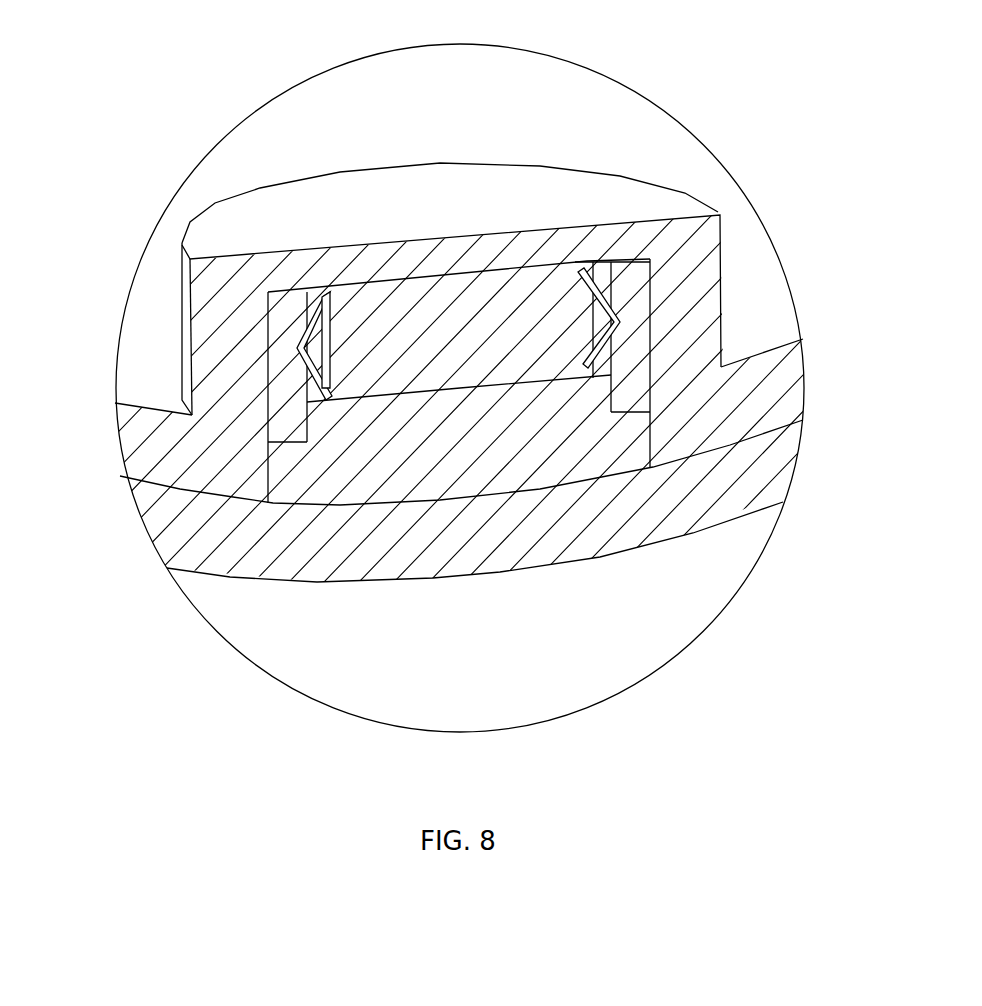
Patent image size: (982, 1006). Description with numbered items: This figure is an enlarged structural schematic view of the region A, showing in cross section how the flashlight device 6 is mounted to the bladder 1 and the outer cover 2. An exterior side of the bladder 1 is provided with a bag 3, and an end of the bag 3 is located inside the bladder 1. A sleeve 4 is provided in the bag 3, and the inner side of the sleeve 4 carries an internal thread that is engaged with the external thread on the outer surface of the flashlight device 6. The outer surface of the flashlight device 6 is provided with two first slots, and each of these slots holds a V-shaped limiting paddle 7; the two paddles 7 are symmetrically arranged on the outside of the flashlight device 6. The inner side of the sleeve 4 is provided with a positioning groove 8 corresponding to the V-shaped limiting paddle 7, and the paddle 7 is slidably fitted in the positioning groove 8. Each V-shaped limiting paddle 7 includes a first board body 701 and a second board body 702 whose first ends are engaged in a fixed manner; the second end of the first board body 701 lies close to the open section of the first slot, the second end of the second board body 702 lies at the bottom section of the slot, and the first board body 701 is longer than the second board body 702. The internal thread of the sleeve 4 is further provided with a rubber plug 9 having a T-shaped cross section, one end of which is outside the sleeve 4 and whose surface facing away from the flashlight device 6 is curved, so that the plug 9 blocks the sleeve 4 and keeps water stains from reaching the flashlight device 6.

The bladder 1 is at (769, 388).
The outer cover 2 is at (718, 493).
The bag 3 is at (482, 178).
The sleeve 4 is at (621, 283).
The flashlight device 6 is at (564, 279).
The V-shaped limiting paddle 7 is at (307, 326).
The positioning groove 8 is at (320, 347).
The rubber plug 9 is at (385, 470).
The first board body 701 is at (598, 353).
The second board body 702 is at (597, 283).
The region A is at (747, 578).